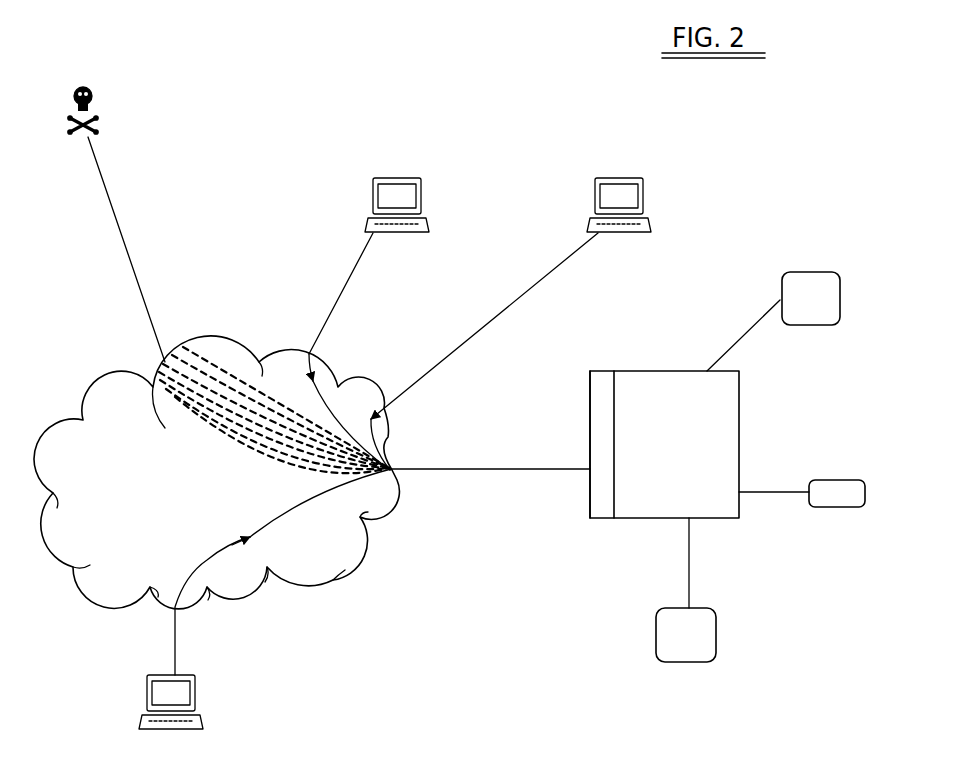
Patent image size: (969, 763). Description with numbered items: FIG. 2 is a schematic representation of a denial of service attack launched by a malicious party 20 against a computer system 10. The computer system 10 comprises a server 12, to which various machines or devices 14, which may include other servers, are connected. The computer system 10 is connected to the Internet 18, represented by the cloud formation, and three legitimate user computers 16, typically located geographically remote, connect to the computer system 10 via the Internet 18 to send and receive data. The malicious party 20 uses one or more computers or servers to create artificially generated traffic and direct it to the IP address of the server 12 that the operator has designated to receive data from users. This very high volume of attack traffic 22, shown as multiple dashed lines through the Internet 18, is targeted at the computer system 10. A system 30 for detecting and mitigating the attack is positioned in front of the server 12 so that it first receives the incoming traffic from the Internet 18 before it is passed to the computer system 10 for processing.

The computer system 10 is at (548, 585).
The server 12 is at (742, 428).
The machines or devices 14 is at (816, 265).
The user computers 16 is at (360, 200).
The Internet 18 is at (322, 582).
The malicious party 20 is at (105, 97).
The attack traffic 22 is at (197, 435).
The system for detecting and mitigating a denial of service attack 30 is at (585, 398).